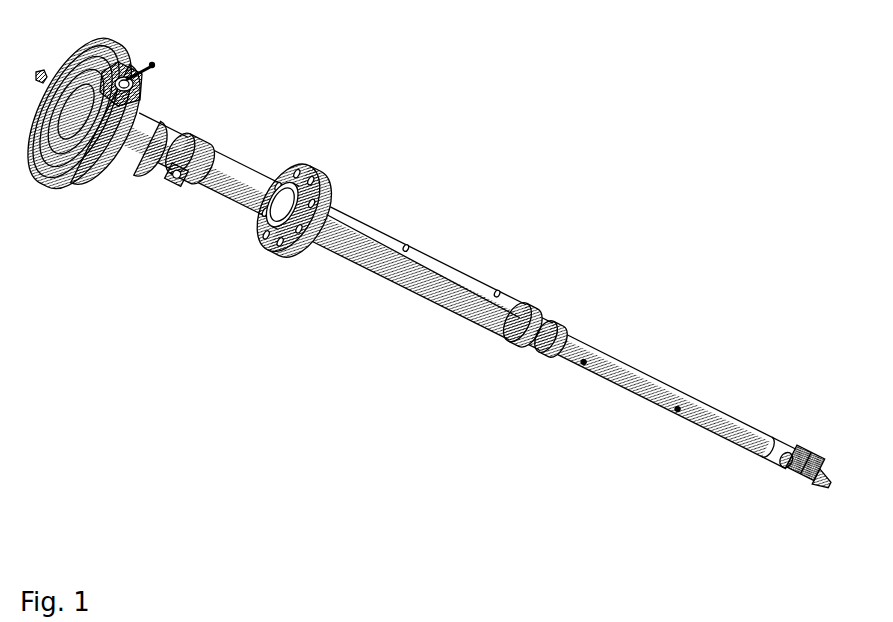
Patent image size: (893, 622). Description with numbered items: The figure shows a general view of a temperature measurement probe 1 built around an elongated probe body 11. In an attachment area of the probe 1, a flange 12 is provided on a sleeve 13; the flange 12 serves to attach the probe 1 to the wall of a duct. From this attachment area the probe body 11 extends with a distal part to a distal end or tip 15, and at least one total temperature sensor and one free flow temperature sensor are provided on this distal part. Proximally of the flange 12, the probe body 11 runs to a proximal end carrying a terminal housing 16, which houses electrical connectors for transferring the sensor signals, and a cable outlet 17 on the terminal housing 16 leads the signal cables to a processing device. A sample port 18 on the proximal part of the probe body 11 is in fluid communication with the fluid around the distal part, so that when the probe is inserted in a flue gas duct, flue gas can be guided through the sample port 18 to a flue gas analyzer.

The probe 1 is at (568, 236).
The probe body 11 is at (345, 315).
The flange 12 is at (322, 168).
The sleeve 13 is at (414, 242).
The tip 15 is at (818, 450).
The terminal housing 16 is at (135, 46).
The cable outlet 17 is at (158, 69).
The sample port 18 is at (176, 181).